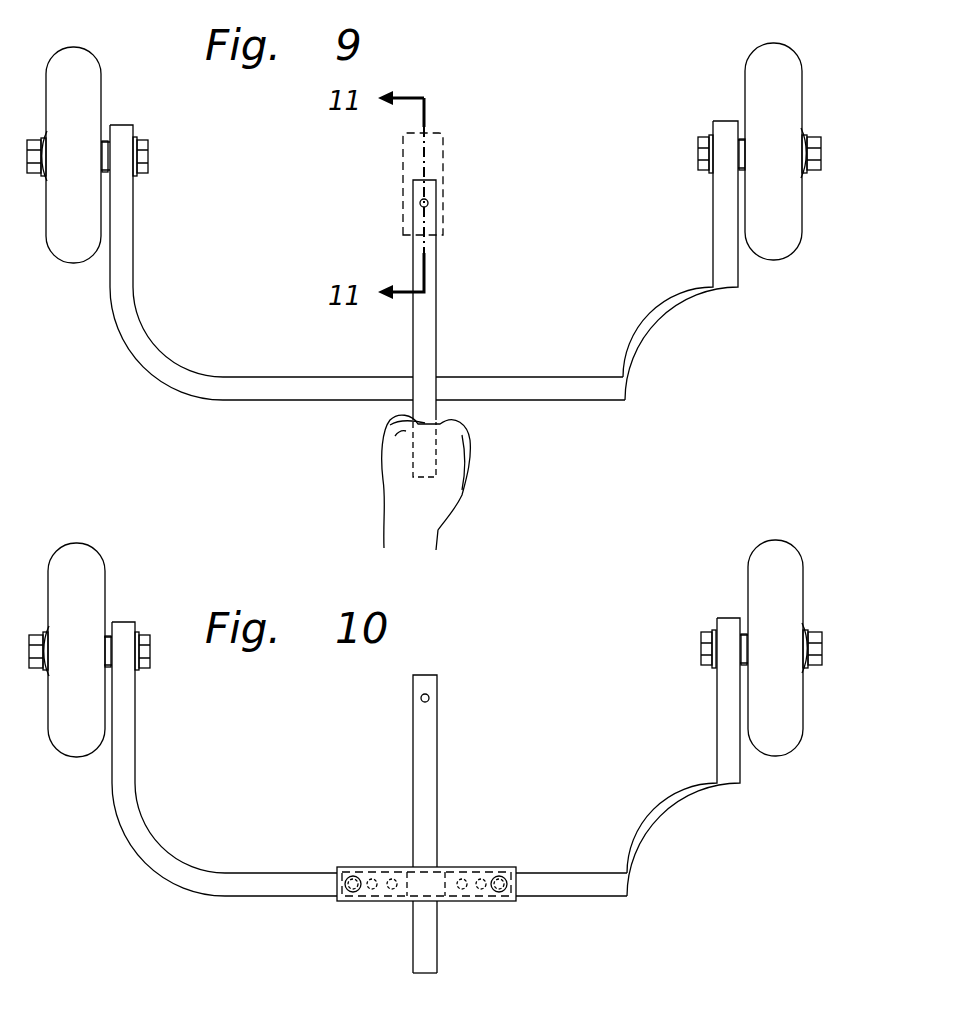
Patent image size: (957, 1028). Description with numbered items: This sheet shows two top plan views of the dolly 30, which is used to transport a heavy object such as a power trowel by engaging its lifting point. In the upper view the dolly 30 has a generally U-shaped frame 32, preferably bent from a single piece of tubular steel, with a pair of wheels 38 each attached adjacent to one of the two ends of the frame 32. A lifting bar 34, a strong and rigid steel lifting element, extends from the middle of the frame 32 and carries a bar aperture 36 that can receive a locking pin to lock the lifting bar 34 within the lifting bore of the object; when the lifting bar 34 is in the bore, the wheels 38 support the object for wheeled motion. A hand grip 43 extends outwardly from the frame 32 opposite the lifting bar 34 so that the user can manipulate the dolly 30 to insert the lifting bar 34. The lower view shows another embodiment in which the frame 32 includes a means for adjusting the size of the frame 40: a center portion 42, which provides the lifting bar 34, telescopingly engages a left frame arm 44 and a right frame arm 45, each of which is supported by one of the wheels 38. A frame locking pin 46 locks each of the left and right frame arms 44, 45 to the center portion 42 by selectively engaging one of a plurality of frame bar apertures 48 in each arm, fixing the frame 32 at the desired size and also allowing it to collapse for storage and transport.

In FIG. 9, the dolly 30 is at (465, 279).
In FIG. 10, the dolly 30 is at (475, 787).
In FIG. 9, the frame 32 is at (681, 383).
In FIG. 9, the lifting bar 34 is at (437, 300).
In FIG. 10, the lifting bar 34 is at (430, 848).
In FIG. 10, the bar aperture 36 is at (430, 698).
In FIG. 9, the wheels 38 is at (803, 50).
In FIG. 10, the wheels 38 is at (107, 545).
In FIG. 10, the means for adjusting the size of the frame 40 is at (440, 883).
In FIG. 10, the center portion 42 is at (413, 942).
In FIG. 10, the hand grip 43 is at (420, 971).
In FIG. 10, the left frame arm 44 is at (248, 887).
In FIG. 10, the right frame arm 45 is at (668, 882).
In FIG. 10, the frame locking pin 46 is at (352, 876).
In FIG. 10, the frame bar apertures 48 is at (375, 868).